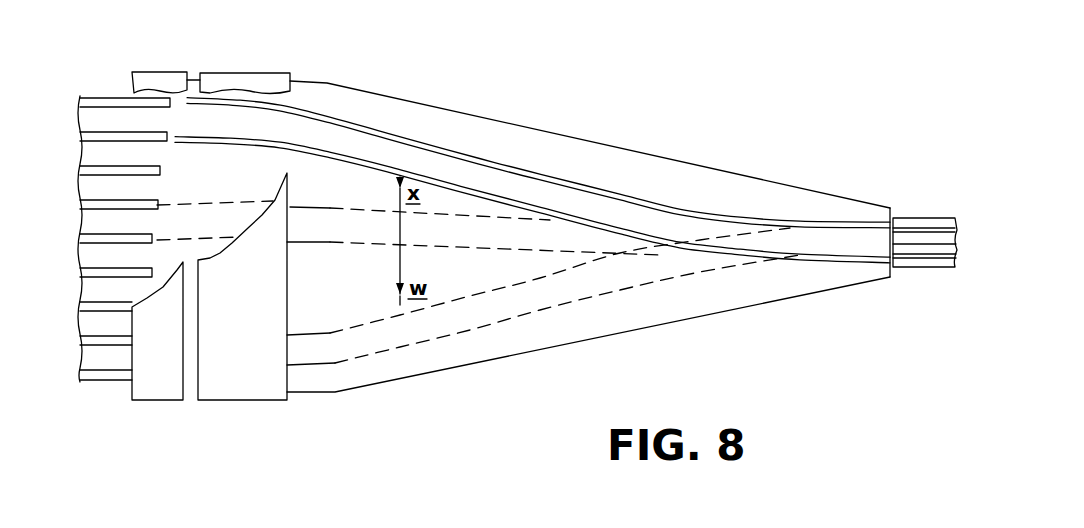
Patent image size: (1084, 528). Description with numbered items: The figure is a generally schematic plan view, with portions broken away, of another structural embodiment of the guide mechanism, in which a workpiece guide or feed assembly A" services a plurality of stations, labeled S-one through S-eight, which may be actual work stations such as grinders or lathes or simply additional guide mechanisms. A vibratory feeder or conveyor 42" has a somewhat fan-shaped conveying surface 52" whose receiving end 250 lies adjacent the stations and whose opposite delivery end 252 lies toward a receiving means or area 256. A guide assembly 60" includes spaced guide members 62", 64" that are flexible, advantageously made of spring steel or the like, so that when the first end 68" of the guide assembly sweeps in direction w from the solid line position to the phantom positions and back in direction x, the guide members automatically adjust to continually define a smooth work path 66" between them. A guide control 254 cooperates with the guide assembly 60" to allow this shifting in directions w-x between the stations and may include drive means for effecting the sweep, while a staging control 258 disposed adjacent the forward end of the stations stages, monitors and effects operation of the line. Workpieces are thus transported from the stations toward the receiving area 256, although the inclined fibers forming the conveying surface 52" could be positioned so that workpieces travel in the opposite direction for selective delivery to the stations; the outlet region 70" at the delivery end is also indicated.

The vibratory feeder or conveyor 42 is at (504, 359).
The conveying surface 52 is at (657, 307).
The guide assembly 60 is at (538, 160).
The guide member 62 is at (387, 171).
The guide member 64 is at (493, 160).
The work path 66 is at (698, 225).
The first end 68 is at (182, 98).
The duct outlet 70 is at (880, 242).
The workpiece guide or feed assembly A is at (583, 128).
The receiving end 250 is at (167, 193).
The delivery end 252 is at (893, 210).
The guide control 254 is at (270, 390).
The receiving means or area 256 is at (928, 250).
The staging control 258 is at (176, 392).